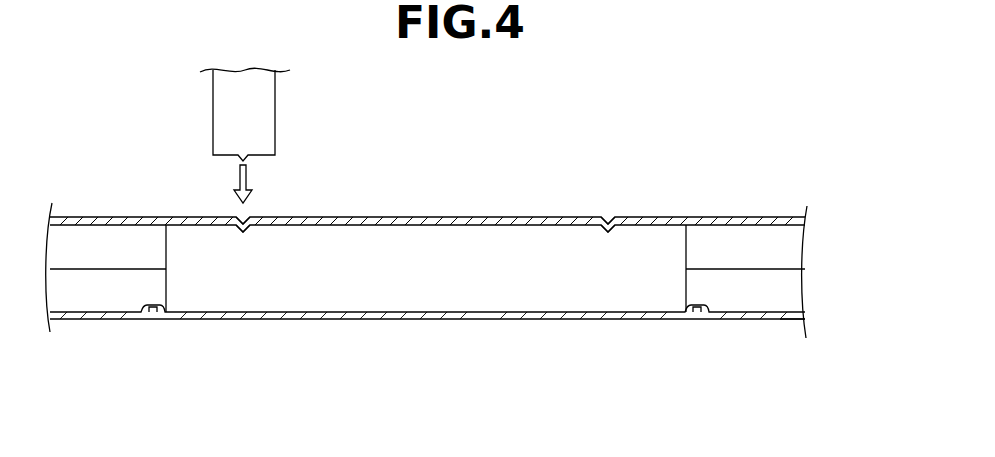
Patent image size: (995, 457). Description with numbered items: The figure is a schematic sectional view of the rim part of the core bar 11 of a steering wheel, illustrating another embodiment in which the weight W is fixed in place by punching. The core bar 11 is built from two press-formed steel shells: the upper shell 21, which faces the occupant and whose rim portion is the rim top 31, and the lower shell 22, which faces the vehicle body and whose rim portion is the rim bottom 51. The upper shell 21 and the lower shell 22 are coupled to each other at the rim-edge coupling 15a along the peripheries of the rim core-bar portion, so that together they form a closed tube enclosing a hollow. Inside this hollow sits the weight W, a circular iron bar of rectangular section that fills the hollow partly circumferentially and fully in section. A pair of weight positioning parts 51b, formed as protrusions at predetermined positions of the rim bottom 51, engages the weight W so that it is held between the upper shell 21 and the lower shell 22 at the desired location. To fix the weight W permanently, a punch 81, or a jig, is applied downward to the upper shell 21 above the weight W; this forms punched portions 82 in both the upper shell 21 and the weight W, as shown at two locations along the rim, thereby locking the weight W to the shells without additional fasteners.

The core bar 11 is at (836, 194).
The upper shell 21 is at (720, 216).
The lower shell 22 is at (749, 322).
The rim top 31 is at (787, 216).
The rim-edge coupling 15a is at (790, 270).
The rim bottom 51 is at (788, 322).
The weight positioning parts 51b is at (143, 320).
The punch 81 is at (265, 107).
The punched portions 82 is at (246, 219).
The weight W is at (491, 294).